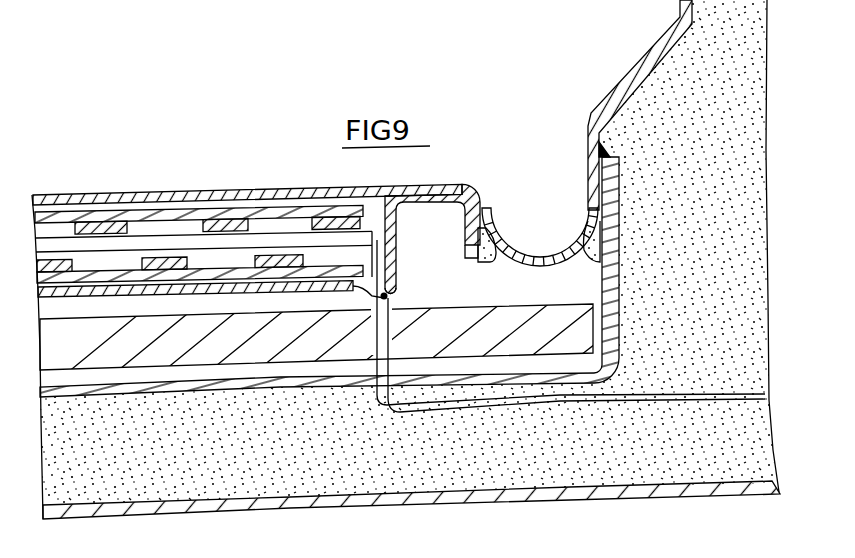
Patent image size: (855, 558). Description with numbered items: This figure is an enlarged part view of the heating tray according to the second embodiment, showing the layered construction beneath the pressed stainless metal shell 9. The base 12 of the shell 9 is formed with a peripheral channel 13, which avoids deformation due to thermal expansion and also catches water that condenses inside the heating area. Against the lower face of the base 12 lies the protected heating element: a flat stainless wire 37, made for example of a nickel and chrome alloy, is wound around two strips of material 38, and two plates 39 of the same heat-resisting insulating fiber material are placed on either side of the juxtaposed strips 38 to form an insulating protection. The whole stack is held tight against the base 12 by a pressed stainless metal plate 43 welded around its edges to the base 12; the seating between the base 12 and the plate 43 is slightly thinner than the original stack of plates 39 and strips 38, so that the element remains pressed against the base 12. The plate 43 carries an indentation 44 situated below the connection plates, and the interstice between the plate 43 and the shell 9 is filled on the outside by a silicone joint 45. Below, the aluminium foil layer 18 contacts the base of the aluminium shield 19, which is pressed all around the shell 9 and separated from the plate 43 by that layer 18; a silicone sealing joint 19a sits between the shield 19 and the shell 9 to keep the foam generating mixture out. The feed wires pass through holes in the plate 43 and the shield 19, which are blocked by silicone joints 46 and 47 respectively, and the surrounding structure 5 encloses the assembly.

The housing wall 5 is at (762, 62).
The stainless metal shell 9 is at (641, 58).
The base 12 is at (295, 188).
The peripheral channel 13 is at (537, 253).
The reflecting foil of aluminium 18 is at (77, 318).
The aluminium shield 19 is at (603, 279).
The silicone sealing joint 19a is at (588, 133).
The flat stainless wire 37 is at (122, 228).
The strips of material 38 is at (227, 247).
The plates 39 is at (93, 277).
The pressed stainless metal plate 43 is at (397, 253).
The indentation 44 is at (393, 293).
The silicone joint 45 is at (485, 261).
The silicone joint 46 is at (375, 298).
The silicone joint 47 is at (372, 396).